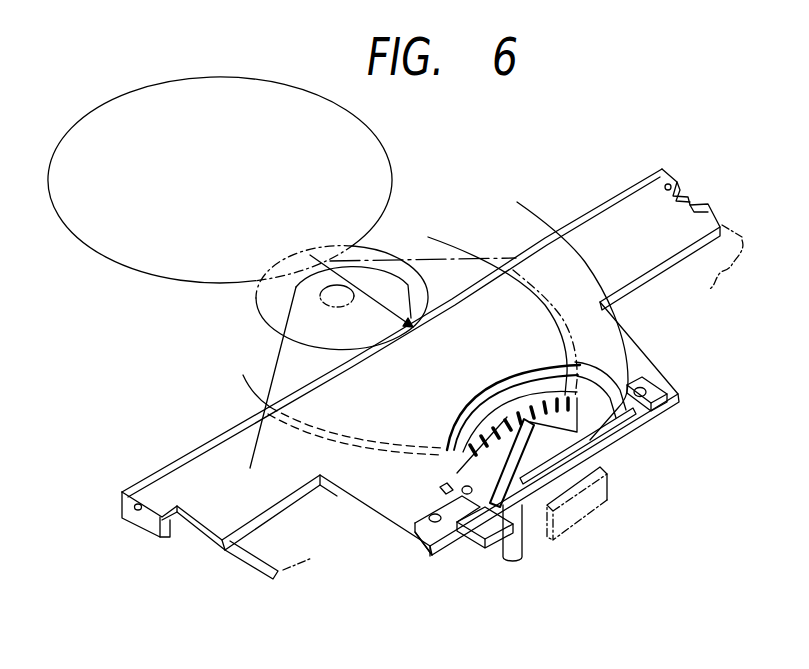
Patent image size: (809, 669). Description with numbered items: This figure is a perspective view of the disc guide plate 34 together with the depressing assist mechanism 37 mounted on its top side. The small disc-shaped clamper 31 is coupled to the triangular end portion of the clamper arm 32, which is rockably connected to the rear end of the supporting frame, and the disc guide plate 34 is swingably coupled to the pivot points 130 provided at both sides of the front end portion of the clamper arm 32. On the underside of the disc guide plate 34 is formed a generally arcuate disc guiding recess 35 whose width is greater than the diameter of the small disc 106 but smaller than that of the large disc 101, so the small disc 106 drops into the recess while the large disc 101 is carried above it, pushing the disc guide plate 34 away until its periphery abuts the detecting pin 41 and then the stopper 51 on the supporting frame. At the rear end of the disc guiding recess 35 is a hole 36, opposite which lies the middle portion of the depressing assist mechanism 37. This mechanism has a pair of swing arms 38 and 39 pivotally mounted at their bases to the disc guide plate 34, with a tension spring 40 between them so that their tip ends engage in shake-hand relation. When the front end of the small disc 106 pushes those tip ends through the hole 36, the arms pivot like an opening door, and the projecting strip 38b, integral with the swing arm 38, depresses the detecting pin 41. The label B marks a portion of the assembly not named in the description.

The clamper 31 is at (255, 302).
The clamper arm 32 is at (253, 576).
The disc guide plate 34 is at (250, 463).
The disc guiding recess 35 is at (573, 331).
The hole 36 is at (582, 403).
The depressing assist mechanism 37 is at (403, 552).
The swing arm 38 is at (447, 525).
The projecting strip 38b is at (480, 545).
The swing arm 39 is at (642, 398).
The tension spring 40 is at (527, 398).
The detecting pin 41 is at (523, 548).
The stopper 51 is at (597, 510).
The large disc 101 is at (543, 218).
The small disc 106 is at (378, 130).
The pivot points 130 is at (670, 182).
The bar B is at (619, 420).